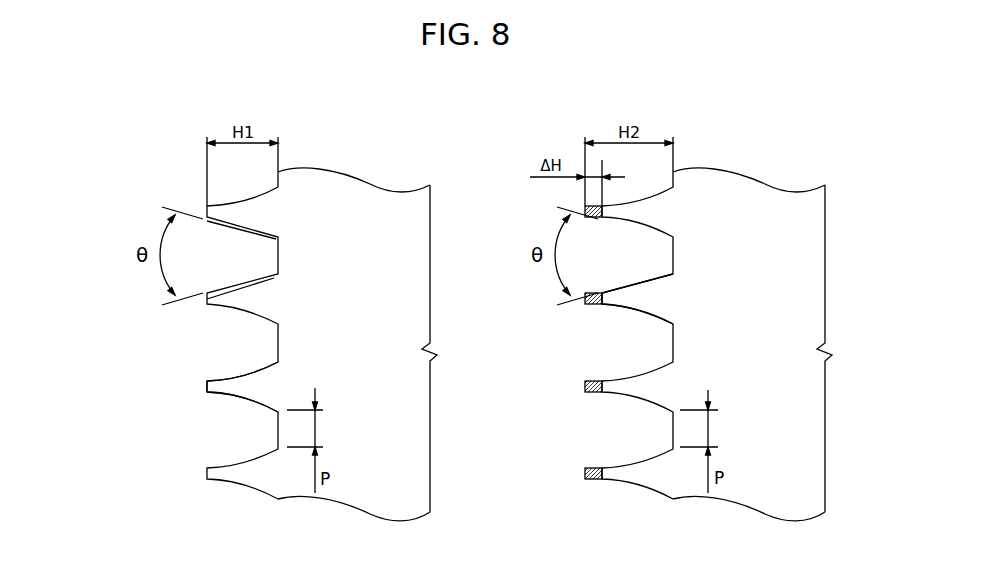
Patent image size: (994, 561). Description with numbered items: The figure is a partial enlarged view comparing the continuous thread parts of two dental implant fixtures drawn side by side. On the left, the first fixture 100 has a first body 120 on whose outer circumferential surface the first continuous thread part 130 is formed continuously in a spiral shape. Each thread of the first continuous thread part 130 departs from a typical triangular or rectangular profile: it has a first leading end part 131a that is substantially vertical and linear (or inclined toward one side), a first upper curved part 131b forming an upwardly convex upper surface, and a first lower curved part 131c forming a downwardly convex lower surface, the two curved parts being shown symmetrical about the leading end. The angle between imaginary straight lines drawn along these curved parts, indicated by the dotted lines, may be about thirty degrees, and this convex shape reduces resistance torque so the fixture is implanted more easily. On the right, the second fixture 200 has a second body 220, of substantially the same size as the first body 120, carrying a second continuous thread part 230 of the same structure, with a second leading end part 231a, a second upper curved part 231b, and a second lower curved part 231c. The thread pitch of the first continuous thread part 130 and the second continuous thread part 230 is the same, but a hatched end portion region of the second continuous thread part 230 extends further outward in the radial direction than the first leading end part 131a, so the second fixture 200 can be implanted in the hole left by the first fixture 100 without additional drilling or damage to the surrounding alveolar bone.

The first fixture 100 is at (399, 192).
The first body 120 is at (418, 495).
The first continuous thread part 130 is at (118, 353).
The first leading end part 131a is at (207, 382).
The first upper curved part 131b is at (262, 376).
The first lower curved part 131c is at (262, 400).
The second fixture 200 is at (794, 192).
The second body 220 is at (815, 496).
The second continuous thread part 230 is at (600, 316).
The second leading end part 231a is at (604, 297).
The second upper curved part 231b is at (604, 294).
The second lower curved part 231c is at (604, 305).